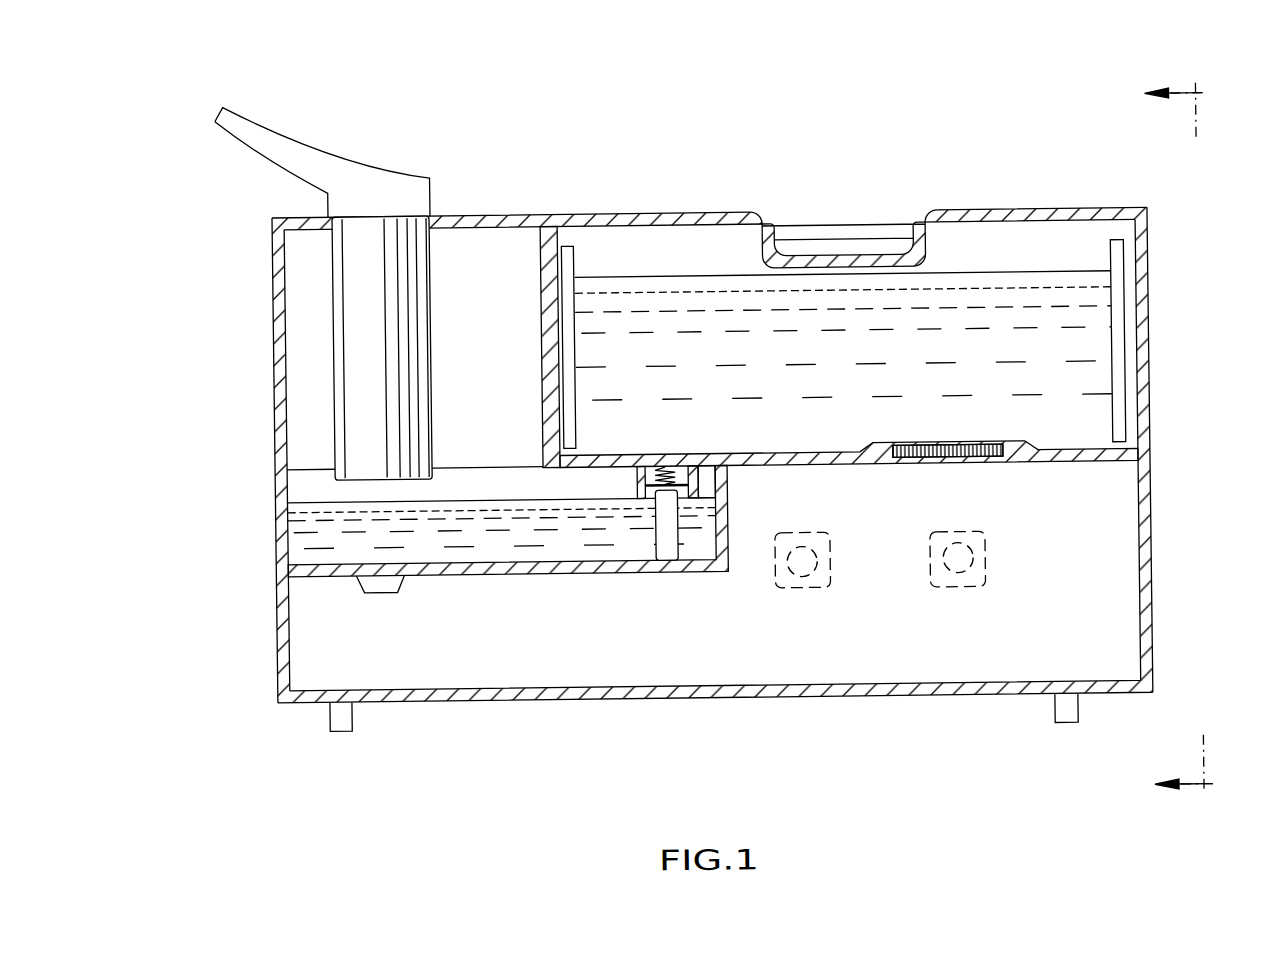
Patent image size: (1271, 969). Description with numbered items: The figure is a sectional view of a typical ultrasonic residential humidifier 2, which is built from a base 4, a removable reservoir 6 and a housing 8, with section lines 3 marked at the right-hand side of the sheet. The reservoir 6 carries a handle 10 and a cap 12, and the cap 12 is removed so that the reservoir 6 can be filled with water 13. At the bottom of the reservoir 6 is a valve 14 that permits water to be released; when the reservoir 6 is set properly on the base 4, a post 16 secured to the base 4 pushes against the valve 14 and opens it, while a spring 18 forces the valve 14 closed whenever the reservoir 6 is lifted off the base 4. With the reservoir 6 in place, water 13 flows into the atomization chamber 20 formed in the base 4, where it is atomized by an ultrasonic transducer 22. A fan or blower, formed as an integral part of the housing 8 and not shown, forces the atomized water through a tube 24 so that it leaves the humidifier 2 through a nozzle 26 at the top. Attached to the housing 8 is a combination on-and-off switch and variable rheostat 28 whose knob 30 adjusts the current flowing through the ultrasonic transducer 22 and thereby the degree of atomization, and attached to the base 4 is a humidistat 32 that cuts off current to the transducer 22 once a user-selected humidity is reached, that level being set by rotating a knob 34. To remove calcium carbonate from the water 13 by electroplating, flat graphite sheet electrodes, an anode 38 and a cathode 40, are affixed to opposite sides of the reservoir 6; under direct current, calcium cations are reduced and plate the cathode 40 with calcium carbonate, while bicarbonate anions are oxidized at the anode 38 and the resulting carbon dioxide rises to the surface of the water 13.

The humidifier 2 is at (703, 468).
The section line 3- 3 is at (1164, 438).
The base 4 is at (659, 444).
The reservoir 6 is at (692, 221).
The housing 8 is at (271, 374).
The handle 10 is at (836, 232).
The cap 12 is at (1000, 472).
The water 13 is at (1098, 357).
The valve 14 is at (637, 485).
The post 16 is at (672, 478).
The spring 18 is at (685, 493).
The atomization chamber 20 is at (474, 549).
The ultrasonic transducer 22 is at (356, 598).
The tube 24 is at (332, 310).
The nozzle 26 is at (380, 168).
The combination on-and-off switch and variable rheostat 28 is at (993, 577).
The knob 30 is at (946, 598).
The humidistat 32 is at (768, 586).
The knob 34 is at (793, 594).
The anode 38 is at (566, 251).
The cathode 40 is at (1118, 248).